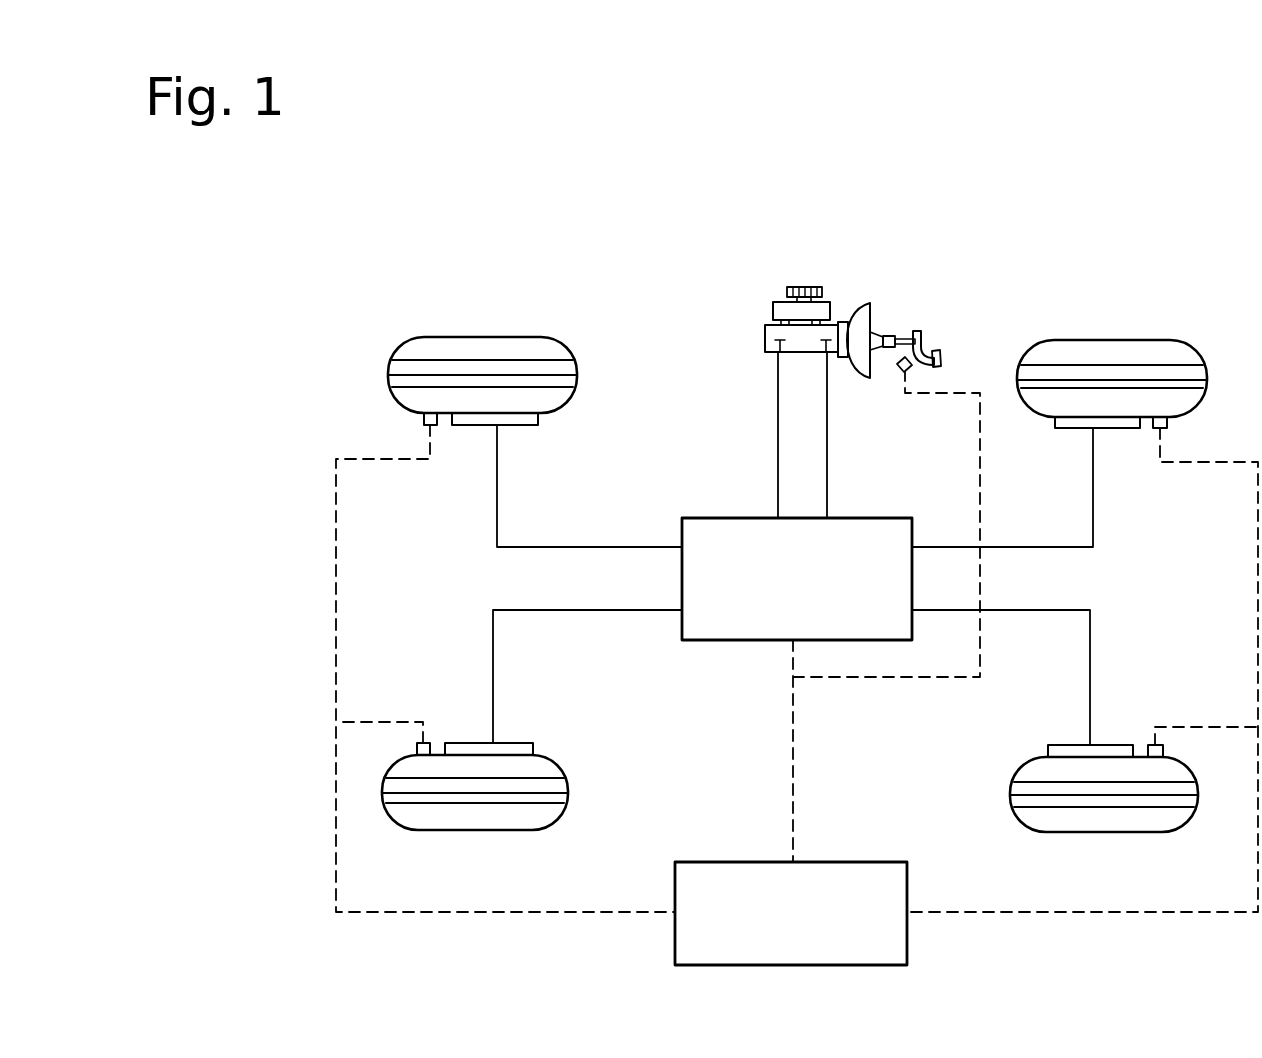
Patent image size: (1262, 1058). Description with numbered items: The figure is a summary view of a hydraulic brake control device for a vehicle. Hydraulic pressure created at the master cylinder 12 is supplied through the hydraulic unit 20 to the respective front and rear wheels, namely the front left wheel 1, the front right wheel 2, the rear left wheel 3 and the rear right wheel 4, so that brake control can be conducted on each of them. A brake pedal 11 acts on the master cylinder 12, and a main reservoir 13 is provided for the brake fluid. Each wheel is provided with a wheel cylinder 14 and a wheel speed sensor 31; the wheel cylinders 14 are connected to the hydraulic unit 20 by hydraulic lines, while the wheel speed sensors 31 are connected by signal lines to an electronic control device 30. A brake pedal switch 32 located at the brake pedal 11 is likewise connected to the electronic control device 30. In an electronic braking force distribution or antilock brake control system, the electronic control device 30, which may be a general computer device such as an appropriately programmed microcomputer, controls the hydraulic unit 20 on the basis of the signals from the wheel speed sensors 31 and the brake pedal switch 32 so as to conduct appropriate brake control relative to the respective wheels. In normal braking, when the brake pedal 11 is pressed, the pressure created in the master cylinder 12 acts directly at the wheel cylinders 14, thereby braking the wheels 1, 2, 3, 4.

The front left wheel 1 is at (478, 830).
The front right wheel 2 is at (488, 337).
The rear left wheel 3 is at (1100, 832).
The rear right wheel 4 is at (1110, 340).
The brake pedal 11 is at (925, 338).
The master cylinder 12 is at (765, 340).
The main reservoir 13 is at (773, 312).
The wheel cylinder 14 is at (540, 426).
The hydraulic unit 20 is at (725, 642).
The electronic control device 30 is at (910, 894).
The wheel speed sensor 31 is at (431, 428).
The brake pedal switch 32 is at (900, 372).